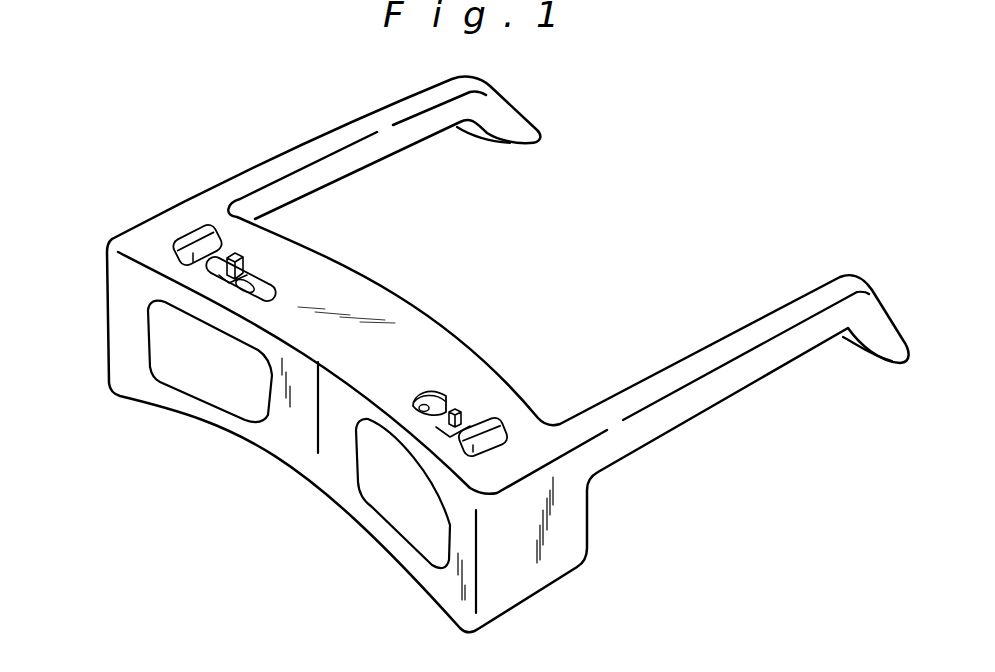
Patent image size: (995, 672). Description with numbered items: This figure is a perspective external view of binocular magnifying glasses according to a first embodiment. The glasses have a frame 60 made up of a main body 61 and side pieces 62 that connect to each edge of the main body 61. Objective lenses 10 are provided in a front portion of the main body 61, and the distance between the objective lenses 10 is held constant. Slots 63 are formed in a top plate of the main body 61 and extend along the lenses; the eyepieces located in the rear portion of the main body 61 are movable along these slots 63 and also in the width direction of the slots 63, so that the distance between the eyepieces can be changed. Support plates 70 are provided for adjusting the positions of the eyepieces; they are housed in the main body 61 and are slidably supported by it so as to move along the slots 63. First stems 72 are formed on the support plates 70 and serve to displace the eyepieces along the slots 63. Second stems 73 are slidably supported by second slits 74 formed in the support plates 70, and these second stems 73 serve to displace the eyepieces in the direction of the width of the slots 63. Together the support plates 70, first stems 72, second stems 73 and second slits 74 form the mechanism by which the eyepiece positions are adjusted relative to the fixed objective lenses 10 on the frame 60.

The objective lens 10 is at (230, 397).
The frame 60 is at (614, 507).
The main body 61 is at (407, 328).
The side piece 62 is at (368, 160).
The slot 63 is at (215, 290).
The support plate 70 is at (314, 337).
The first stem 72 is at (188, 233).
The second stem 73 is at (237, 254).
The second slit 74 is at (228, 274).